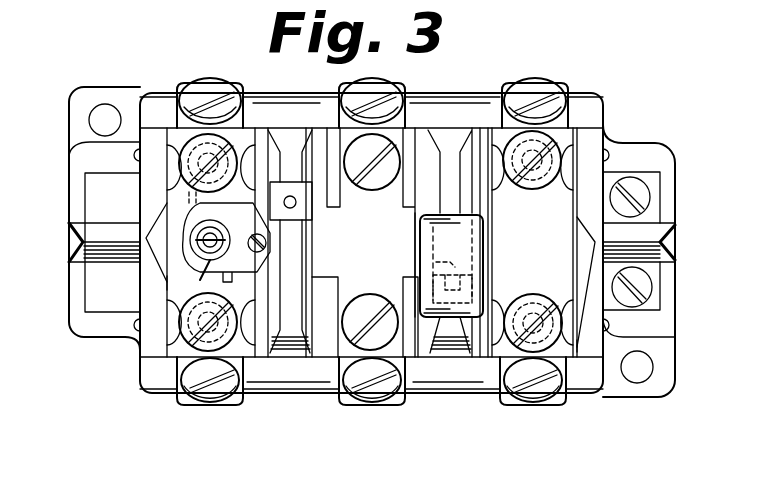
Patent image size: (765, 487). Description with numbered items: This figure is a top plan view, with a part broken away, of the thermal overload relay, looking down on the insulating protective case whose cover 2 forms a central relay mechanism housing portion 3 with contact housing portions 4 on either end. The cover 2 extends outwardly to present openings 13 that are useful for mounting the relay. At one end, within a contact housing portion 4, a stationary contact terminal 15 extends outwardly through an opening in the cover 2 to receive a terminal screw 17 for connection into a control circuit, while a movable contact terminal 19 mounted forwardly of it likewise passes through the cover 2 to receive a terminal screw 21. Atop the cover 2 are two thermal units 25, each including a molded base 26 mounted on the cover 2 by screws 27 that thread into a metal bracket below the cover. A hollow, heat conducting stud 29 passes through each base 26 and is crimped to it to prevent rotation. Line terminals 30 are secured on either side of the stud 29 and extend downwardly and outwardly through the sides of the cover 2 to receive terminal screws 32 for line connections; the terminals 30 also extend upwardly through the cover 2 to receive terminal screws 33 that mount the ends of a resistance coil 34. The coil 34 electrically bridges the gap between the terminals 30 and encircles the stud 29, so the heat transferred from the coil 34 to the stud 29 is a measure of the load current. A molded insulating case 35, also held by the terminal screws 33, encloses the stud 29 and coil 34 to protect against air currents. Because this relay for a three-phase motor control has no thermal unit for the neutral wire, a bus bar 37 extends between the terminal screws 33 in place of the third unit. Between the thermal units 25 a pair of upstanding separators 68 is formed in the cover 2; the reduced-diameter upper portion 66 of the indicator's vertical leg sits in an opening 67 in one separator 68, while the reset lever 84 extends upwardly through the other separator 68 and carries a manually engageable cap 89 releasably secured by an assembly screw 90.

The cover 2 is at (598, 94).
The central relay mechanism housing portion 3 is at (479, 94).
The contact housing portions 4 is at (77, 159).
The openings 13 is at (103, 121).
The stationary contact terminal 15 is at (652, 217).
The terminal screw 17 is at (645, 196).
The movable contact terminal 19 is at (652, 271).
The terminal screw 21 is at (645, 287).
The thermal units 25 is at (173, 281).
The molded base 26 is at (253, 258).
The screws 27 is at (262, 240).
The hollow heat conducting stud 29 is at (210, 235).
The line terminals 30 is at (230, 80).
The terminal screws 32 is at (223, 92).
The terminal screws 33 is at (228, 148).
The resistance coil 34 is at (208, 262).
The molded insulating case 35 is at (167, 203).
The bus bar 37 is at (350, 345).
The upper portion of the indicator vertical leg 66 is at (295, 195).
The opening 67 is at (290, 200).
The upstanding separators 68 is at (313, 182).
The reset lever 84 is at (472, 300).
The manually engageable cap 89 is at (418, 235).
The assembly screw 90 is at (488, 252).